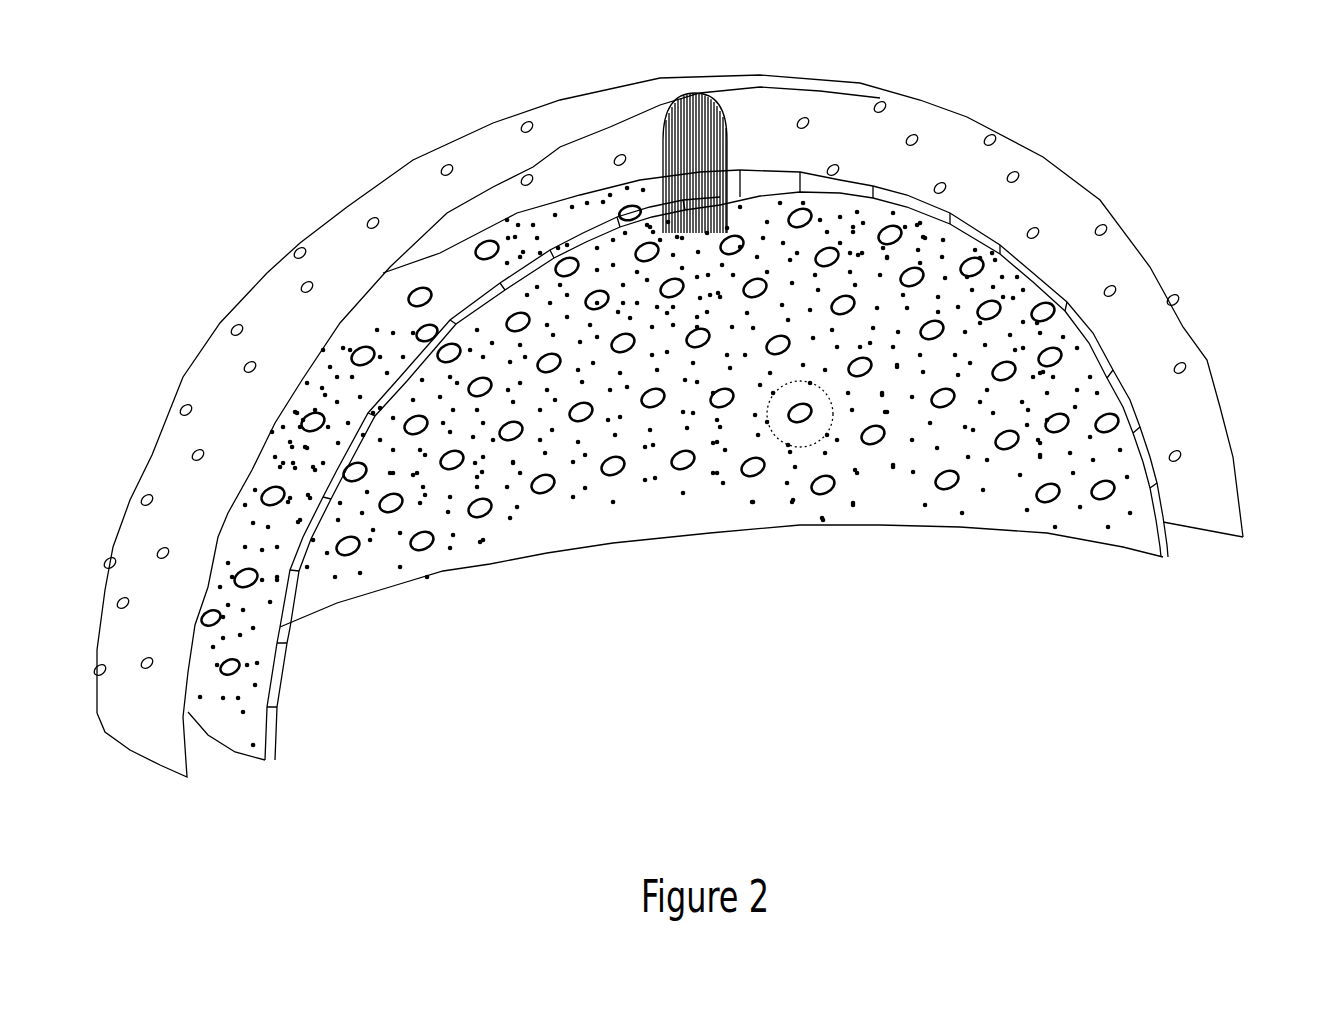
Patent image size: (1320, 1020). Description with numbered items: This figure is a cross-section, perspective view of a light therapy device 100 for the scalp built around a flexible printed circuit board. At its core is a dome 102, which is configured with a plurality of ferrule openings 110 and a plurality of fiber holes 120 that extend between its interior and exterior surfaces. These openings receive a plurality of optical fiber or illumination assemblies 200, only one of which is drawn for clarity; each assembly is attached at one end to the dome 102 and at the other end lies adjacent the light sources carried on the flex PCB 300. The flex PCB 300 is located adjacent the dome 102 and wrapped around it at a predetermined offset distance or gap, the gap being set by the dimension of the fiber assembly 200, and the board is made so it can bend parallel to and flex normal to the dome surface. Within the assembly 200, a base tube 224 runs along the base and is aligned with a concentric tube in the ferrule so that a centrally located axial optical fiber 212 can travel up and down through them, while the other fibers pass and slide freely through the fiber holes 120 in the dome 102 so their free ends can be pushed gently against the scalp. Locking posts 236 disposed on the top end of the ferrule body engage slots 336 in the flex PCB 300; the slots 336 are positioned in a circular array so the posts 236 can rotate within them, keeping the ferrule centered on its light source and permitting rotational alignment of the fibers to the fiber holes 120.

The light therapy device 100 is at (795, 743).
The dome 102 is at (1167, 557).
The ferrule openings 110 is at (830, 495).
The fiber holes 120 is at (660, 178).
The optical fiber assembly 200 is at (665, 135).
The axial optical fiber 212 is at (765, 170).
The base tube 224 is at (871, 442).
The locking posts 236 is at (677, 100).
The flexible printed circuit board 300 is at (1045, 155).
The slots 336 is at (297, 247).